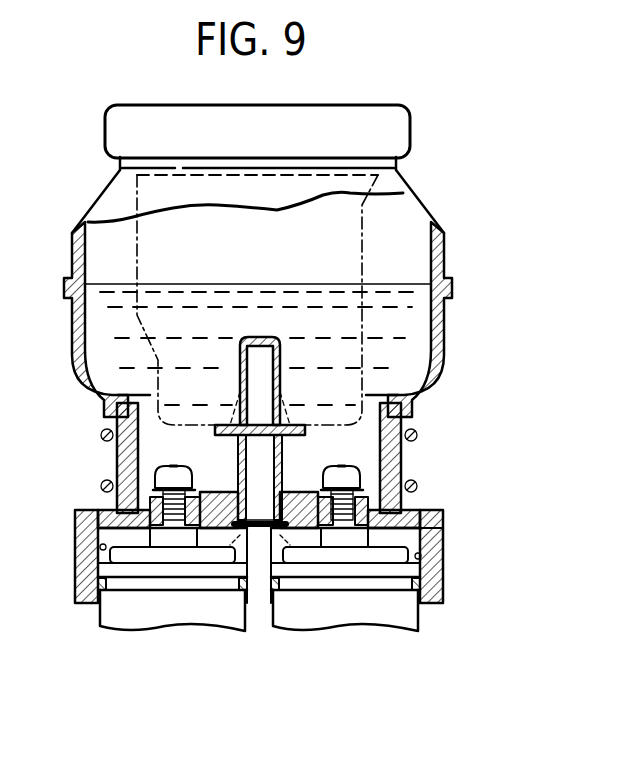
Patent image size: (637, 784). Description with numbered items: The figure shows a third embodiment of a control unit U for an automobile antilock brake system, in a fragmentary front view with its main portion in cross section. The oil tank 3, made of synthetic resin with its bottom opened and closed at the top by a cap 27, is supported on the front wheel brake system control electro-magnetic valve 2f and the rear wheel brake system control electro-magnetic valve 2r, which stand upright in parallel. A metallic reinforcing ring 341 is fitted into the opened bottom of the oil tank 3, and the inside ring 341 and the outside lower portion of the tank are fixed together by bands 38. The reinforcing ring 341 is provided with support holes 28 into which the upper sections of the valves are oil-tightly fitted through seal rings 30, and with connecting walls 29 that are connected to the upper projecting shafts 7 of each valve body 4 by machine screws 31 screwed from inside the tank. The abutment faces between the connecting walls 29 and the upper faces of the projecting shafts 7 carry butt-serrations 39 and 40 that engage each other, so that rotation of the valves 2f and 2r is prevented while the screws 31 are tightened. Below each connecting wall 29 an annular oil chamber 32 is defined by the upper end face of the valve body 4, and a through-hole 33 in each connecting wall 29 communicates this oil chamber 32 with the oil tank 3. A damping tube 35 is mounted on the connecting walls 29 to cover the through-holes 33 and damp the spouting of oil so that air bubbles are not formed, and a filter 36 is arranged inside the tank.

The cap 27 is at (406, 127).
The oil tank 3 is at (432, 224).
The filter 36 is at (364, 278).
The damping tube 35 is at (259, 340).
The connecting wall 29 is at (266, 522).
The control unit U is at (492, 416).
The band 38 is at (418, 436).
The annular oil chamber 32 is at (104, 516).
The reinforcing ring 341 is at (446, 538).
The butt-serration 39 is at (149, 494).
The machine screw 31 is at (177, 486).
The butt-serration 40 is at (225, 505).
The upper projecting shaft 7 is at (184, 530).
The support hole 28 is at (100, 548).
The seal ring 30 is at (102, 584).
The through-hole 33 is at (242, 530).
The valve body 4 is at (112, 625).
The rear wheel brake system control electro-magnetic valve 2r is at (165, 630).
The front wheel brake system control electro-magnetic valve 2f is at (351, 629).